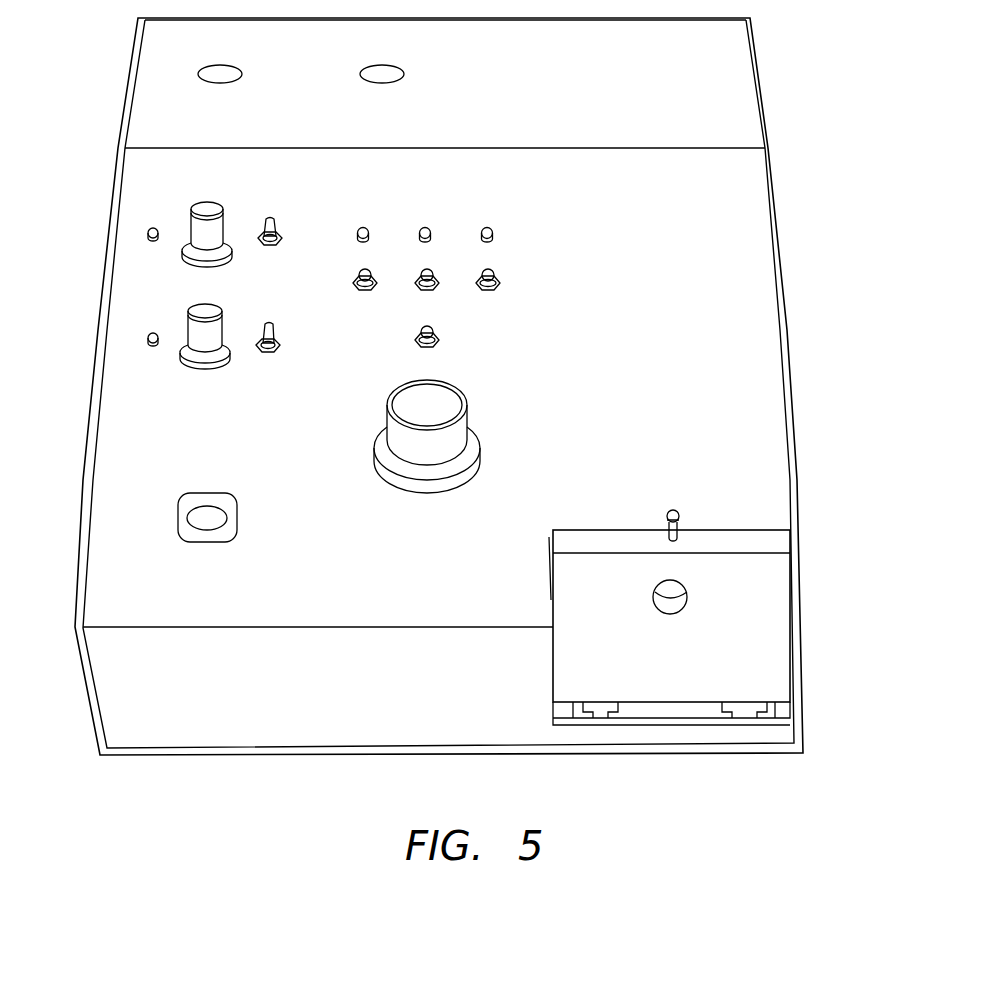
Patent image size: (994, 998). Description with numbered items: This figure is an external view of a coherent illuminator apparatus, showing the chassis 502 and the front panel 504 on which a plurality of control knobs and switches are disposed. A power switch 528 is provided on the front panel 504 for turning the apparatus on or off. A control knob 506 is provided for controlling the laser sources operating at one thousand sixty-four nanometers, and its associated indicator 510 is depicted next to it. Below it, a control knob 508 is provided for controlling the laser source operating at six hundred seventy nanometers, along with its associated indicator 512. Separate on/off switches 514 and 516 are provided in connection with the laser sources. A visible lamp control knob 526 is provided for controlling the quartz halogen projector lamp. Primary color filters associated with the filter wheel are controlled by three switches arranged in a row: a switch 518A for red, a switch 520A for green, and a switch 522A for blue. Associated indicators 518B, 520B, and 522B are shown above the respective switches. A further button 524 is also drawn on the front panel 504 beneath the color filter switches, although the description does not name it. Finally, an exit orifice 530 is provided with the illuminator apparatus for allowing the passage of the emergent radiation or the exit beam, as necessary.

The chassis 502 is at (795, 453).
The front panel 504 is at (133, 435).
The control knob 506 is at (183, 248).
The control knob 508 is at (183, 350).
The indicator 510 is at (152, 237).
The indicator 512 is at (148, 342).
The on/off switch 514 is at (268, 218).
The on/off switch 516 is at (267, 353).
The switch 518A is at (353, 283).
The indicator 518B is at (363, 227).
The switch 520A is at (418, 288).
The indicator 520B is at (426, 227).
The switch 522A is at (500, 283).
The indicator 522B is at (494, 237).
The reset button 524 is at (437, 335).
The visible lamp control knob 526 is at (480, 442).
The power switch 528 is at (215, 528).
The exit orifice 530 is at (680, 605).